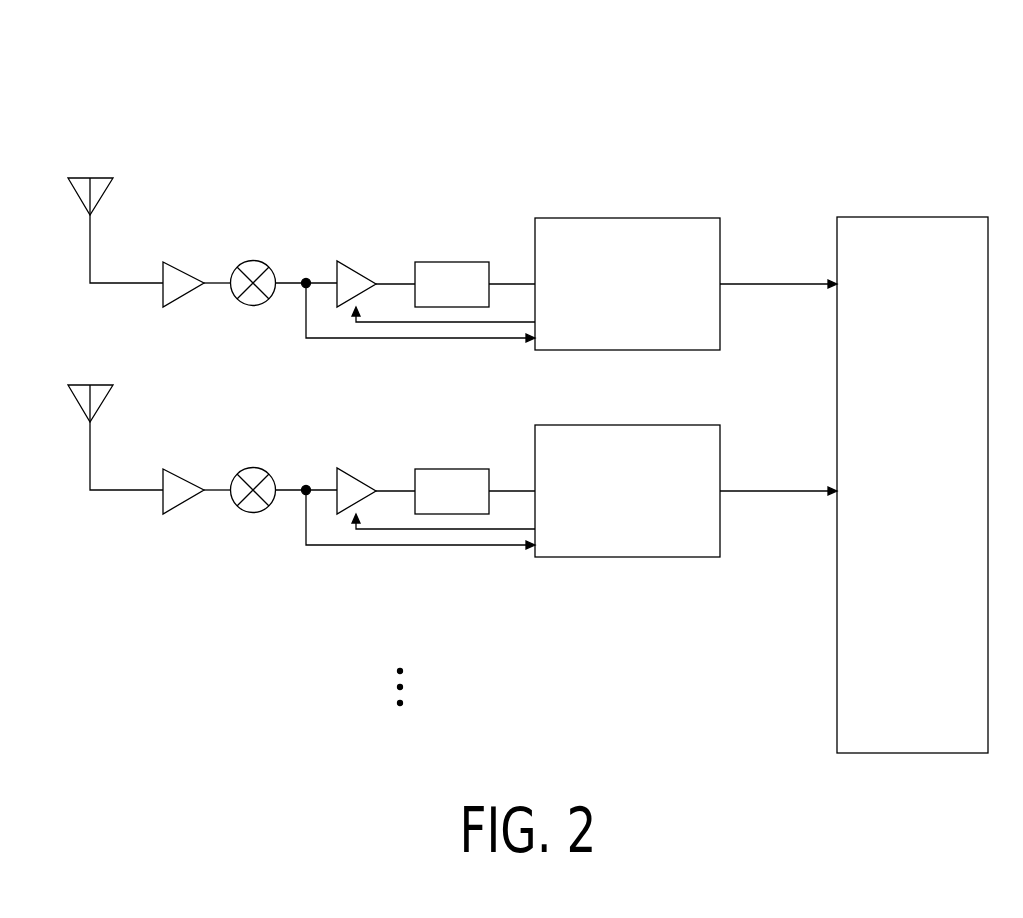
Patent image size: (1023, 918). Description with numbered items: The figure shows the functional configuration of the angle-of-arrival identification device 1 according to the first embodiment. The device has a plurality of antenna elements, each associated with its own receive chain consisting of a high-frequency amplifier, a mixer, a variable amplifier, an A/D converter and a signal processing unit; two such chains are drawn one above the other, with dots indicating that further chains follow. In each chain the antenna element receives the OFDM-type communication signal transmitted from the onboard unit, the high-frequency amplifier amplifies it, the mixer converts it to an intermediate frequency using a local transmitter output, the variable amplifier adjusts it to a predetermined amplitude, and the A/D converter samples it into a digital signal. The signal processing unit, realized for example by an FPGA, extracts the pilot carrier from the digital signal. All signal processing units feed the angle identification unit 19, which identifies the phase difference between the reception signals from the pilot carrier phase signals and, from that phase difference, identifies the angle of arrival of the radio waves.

The angle-of-arrival identification device 1 is at (109, 74).
The angle identification unit 19 is at (914, 216).